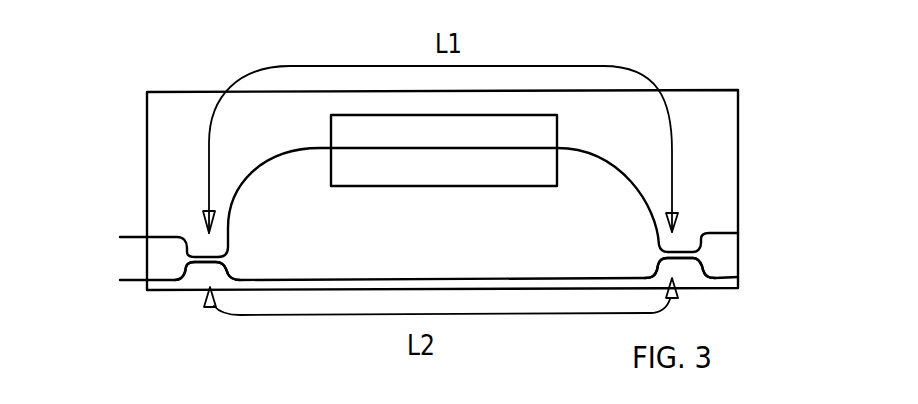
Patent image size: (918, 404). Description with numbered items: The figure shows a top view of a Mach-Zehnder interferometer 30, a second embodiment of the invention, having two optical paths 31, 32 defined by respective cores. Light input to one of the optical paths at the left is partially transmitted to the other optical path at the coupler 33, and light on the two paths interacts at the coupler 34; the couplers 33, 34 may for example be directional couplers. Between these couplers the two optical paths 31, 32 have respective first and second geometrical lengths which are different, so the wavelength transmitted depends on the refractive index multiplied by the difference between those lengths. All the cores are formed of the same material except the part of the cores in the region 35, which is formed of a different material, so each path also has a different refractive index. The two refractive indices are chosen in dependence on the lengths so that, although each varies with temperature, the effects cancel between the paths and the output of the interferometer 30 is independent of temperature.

The Mach-Zehnder interferometer 30 is at (743, 83).
The optical path 31 is at (120, 237).
The optical path 32 is at (120, 280).
The coupler 33 is at (203, 277).
The coupler 34 is at (683, 270).
The region 35 is at (443, 193).